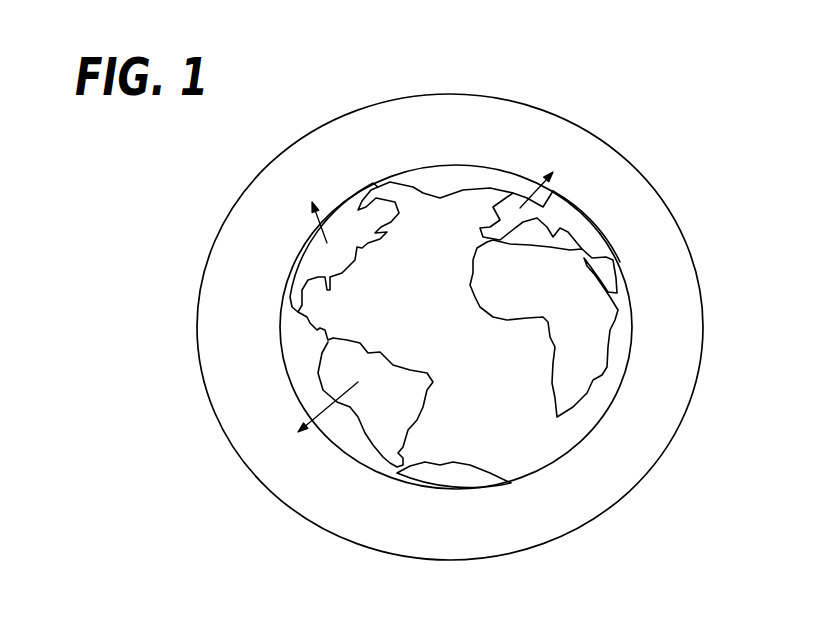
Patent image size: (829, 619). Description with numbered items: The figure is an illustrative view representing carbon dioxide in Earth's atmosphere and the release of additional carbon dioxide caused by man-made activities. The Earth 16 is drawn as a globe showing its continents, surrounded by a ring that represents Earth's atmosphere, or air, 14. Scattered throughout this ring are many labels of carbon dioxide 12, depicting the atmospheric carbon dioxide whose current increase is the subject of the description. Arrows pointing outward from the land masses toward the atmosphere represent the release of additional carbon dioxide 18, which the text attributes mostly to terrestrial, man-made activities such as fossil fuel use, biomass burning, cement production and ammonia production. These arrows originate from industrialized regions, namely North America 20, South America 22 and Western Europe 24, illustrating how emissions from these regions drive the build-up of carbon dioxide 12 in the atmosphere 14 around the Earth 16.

The carbon dioxide 12 is at (354, 110).
The atmosphere 14 is at (466, 108).
The Earth 16 is at (587, 435).
The additional carbon dioxide 18 is at (290, 160).
The North America 20 is at (313, 262).
The South America 22 is at (380, 436).
The Western Europe 24 is at (537, 218).